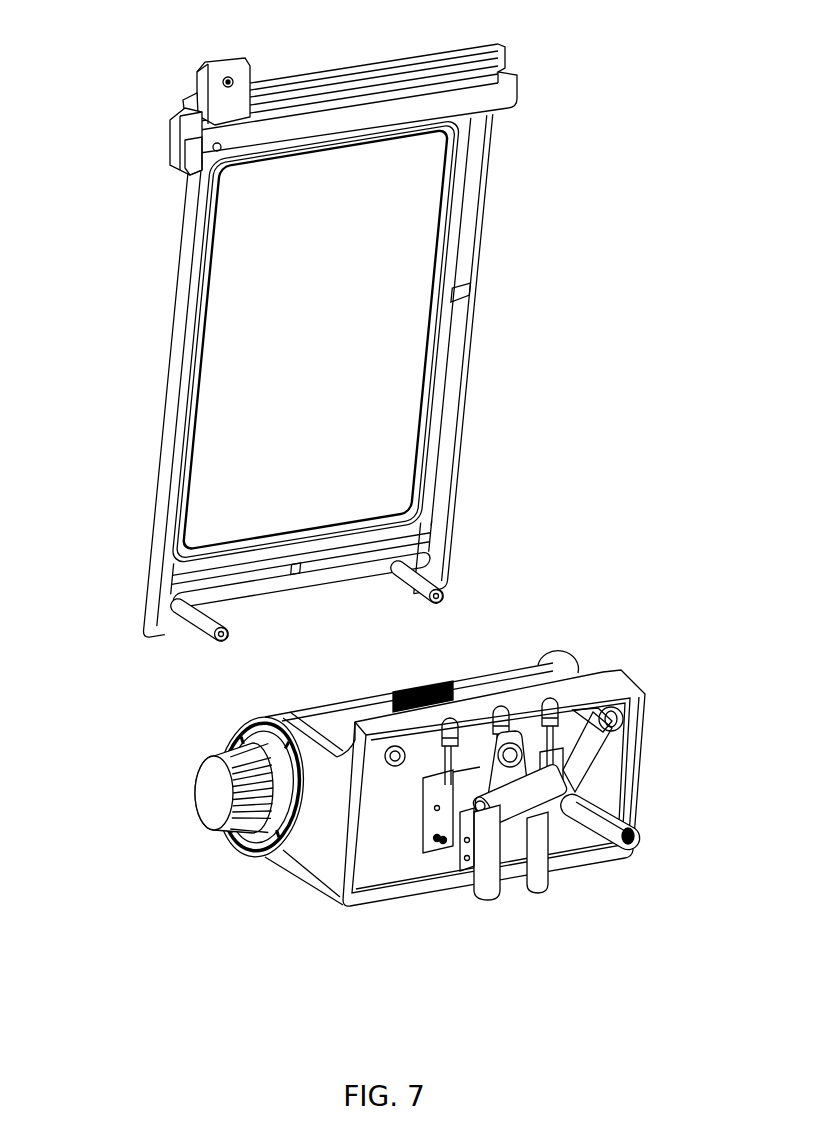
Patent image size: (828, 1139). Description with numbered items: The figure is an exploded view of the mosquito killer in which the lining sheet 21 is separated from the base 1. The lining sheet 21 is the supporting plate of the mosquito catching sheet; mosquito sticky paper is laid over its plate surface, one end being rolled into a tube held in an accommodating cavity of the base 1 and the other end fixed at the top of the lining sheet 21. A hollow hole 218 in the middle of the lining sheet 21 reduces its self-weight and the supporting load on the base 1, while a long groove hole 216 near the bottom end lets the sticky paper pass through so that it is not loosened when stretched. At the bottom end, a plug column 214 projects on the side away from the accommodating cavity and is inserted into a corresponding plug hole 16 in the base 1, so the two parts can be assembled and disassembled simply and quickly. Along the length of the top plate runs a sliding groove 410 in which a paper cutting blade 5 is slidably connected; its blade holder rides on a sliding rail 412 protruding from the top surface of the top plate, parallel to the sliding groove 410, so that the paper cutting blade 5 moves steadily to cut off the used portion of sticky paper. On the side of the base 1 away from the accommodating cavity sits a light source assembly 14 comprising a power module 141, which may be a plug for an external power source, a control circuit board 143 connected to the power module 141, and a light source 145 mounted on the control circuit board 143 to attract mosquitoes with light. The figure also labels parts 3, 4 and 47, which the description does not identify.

The base 1 is at (594, 676).
The knob 3 is at (218, 797).
The bracket 4 is at (177, 117).
The paper cutting blade 5 is at (205, 65).
The light source assembly 14 is at (563, 840).
The plug hole 16 is at (623, 723).
The lining sheet 21 is at (172, 350).
The hook 47 is at (210, 147).
The power module 141 is at (517, 822).
The control circuit board 143 is at (456, 828).
The light source 145 is at (550, 699).
The plug column 214 is at (418, 565).
The long groove hole 216 is at (405, 540).
The hollow hole 218 is at (357, 324).
The sliding groove 410 is at (468, 53).
The sliding rail 412 is at (188, 106).